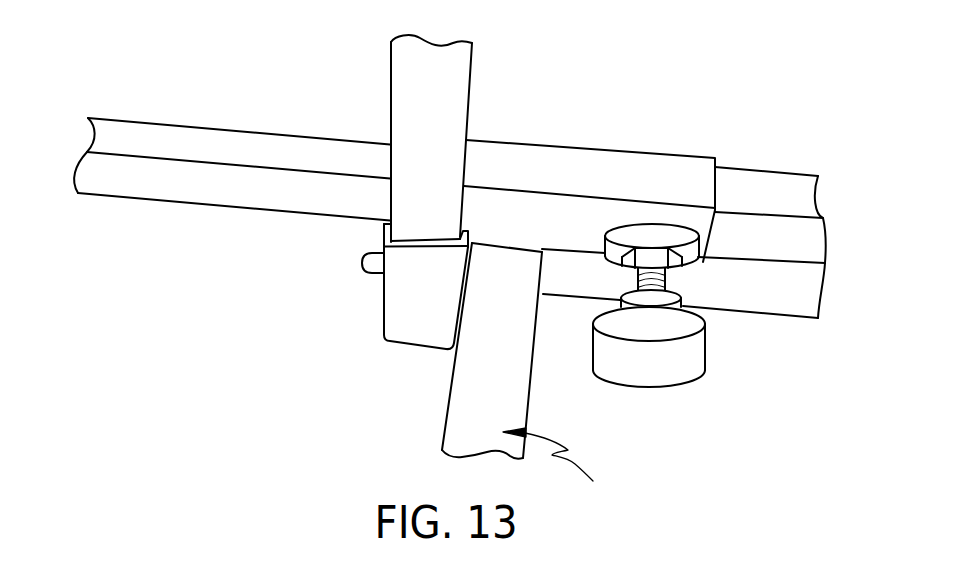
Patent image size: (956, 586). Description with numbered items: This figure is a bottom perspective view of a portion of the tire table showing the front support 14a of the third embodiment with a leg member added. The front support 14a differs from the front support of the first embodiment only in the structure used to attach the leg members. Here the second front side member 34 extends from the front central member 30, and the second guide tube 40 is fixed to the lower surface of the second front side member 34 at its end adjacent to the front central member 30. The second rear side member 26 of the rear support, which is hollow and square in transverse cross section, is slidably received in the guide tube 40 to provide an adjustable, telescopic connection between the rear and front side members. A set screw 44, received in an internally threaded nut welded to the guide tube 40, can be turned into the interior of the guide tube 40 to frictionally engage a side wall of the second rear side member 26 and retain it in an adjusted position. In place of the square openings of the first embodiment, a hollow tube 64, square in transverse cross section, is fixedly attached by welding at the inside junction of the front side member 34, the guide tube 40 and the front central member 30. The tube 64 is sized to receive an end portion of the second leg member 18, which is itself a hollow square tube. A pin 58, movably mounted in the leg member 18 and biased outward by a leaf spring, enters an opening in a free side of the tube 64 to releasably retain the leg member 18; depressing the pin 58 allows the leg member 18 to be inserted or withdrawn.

The second rear side member 26 is at (210, 143).
The second leg member 18 is at (447, 85).
The second guide tube 40 is at (647, 167).
The second front side member 34 is at (763, 300).
The set screw 44 is at (652, 367).
The pin 58 is at (362, 260).
The hollow tube 64 is at (417, 318).
The front central member 30 is at (457, 419).
The front support 14a is at (570, 468).